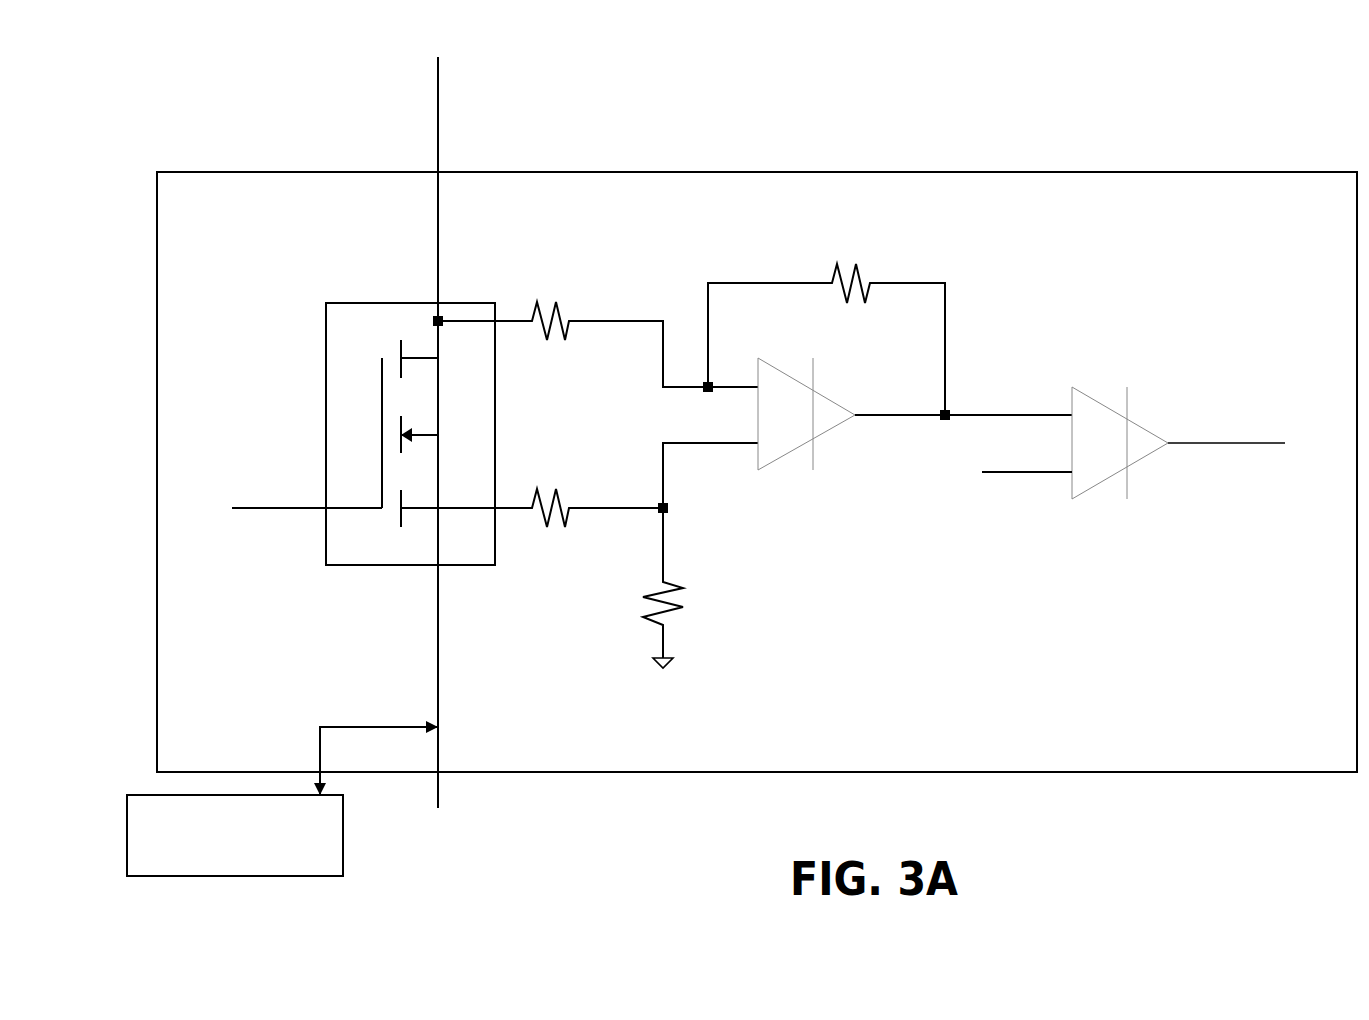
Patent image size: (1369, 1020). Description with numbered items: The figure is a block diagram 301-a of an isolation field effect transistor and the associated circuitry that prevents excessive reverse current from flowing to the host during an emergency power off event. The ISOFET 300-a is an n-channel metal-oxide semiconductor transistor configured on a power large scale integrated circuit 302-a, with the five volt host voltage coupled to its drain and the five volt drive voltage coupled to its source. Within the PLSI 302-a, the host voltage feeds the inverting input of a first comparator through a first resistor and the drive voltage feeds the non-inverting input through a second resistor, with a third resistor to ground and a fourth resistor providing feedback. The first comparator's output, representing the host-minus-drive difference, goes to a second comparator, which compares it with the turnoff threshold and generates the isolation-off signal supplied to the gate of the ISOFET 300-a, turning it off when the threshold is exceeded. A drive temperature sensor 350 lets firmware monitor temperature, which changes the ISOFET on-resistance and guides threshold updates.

The block diagram 301-a is at (1176, 80).
The power large scale integrated circuit 302-a is at (833, 172).
The isolation field effect transistor 300-a is at (382, 567).
The drive temperature sensor 350 is at (235, 835).